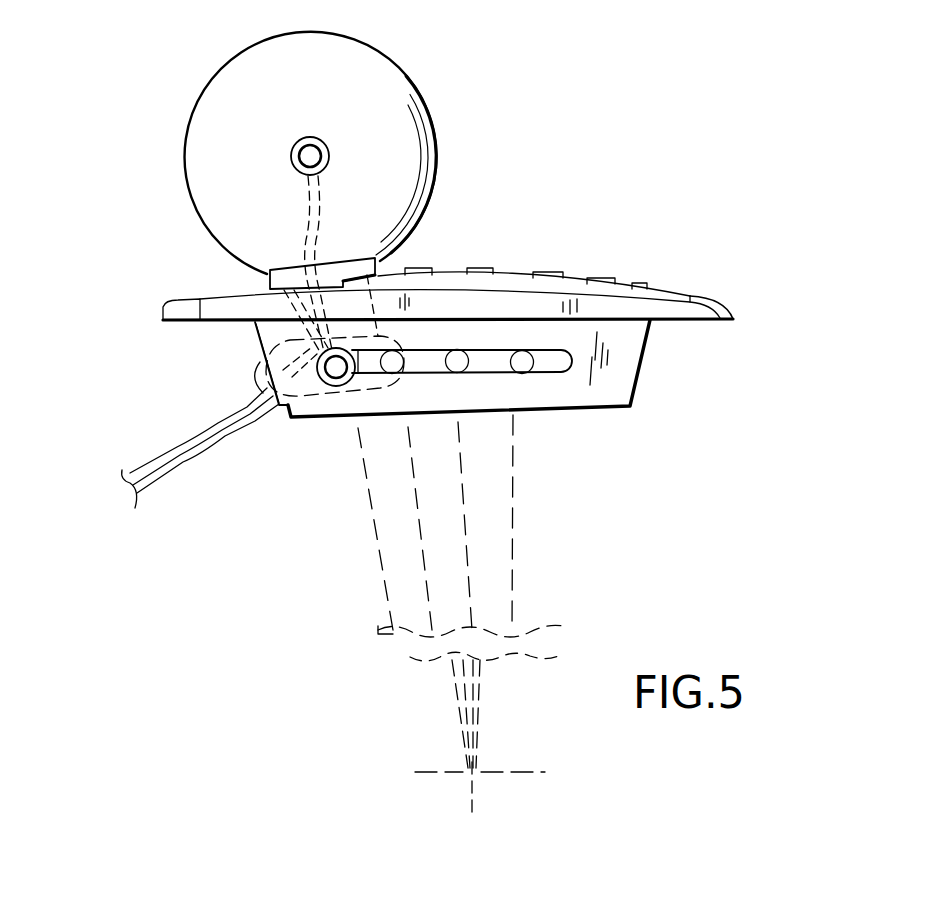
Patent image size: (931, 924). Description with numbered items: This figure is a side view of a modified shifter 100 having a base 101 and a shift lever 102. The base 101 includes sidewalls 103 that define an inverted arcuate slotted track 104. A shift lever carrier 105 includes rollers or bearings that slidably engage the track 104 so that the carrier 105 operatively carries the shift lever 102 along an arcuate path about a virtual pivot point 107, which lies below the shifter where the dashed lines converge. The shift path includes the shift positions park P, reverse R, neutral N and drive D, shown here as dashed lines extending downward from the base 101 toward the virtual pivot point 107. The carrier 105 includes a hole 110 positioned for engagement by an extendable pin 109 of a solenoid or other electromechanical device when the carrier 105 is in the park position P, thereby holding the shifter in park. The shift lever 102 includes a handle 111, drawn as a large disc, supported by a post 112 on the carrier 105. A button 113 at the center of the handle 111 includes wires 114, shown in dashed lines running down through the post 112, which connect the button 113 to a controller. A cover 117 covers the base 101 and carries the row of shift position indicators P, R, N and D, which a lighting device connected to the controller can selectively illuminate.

The modified shifter 100 is at (614, 132).
The base 101 is at (672, 393).
The shift lever 102 is at (155, 204).
The sidewalls 103 is at (620, 338).
The inverted arcuate slotted track 104 is at (540, 283).
The shift lever carrier 105 is at (388, 342).
The virtual pivot point 107 is at (470, 772).
The extendable pin 109 is at (326, 373).
The hole 110 is at (336, 372).
The handle 111 is at (410, 83).
The post 112 is at (253, 323).
The button 113 is at (320, 156).
The wires 114 is at (310, 212).
The cover 117 is at (492, 350).
The neutral shift position N is at (463, 482).
The drive shift position D is at (513, 507).
The park shift position P is at (373, 520).
The reverse shift position R is at (420, 528).